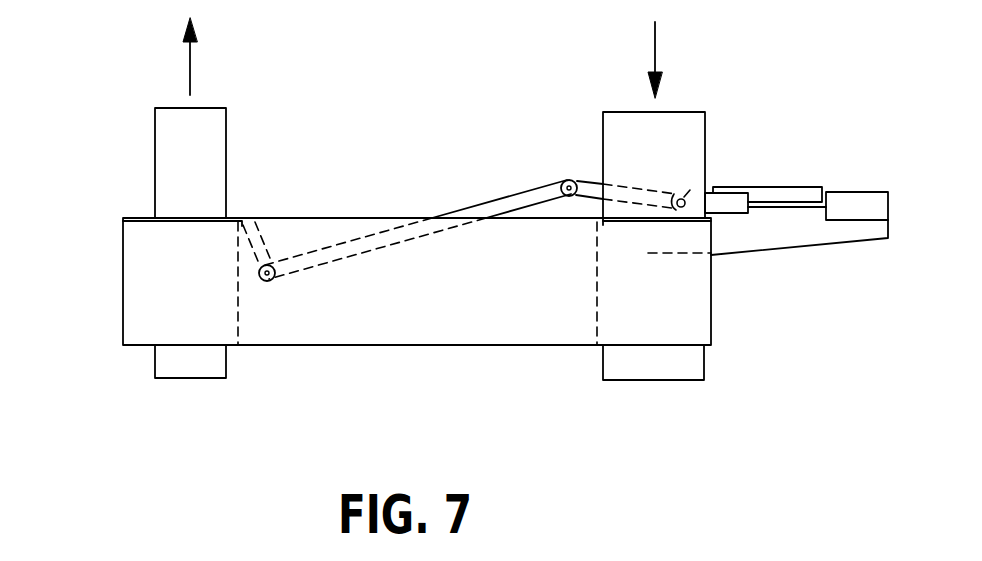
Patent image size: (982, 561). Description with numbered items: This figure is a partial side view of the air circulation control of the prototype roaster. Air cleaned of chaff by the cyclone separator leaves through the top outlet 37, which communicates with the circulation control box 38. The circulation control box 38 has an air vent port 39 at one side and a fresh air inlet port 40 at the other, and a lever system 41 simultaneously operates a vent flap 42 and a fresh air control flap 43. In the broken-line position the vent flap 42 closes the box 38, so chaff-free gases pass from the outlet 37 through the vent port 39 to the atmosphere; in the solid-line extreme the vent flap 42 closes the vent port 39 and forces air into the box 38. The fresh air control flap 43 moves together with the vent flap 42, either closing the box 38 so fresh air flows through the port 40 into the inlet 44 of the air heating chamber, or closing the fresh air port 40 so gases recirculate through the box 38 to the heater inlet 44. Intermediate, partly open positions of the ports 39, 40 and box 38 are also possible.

The top outlet 37 is at (191, 366).
The circulation control box 38 is at (441, 318).
The air vent port 39 is at (209, 169).
The fresh air inlet port 40 is at (672, 159).
The lever system 41 is at (523, 190).
The vent flap 42 is at (178, 222).
The fresh air control flap 43 is at (633, 224).
The inlet of air heating chamber 44 is at (660, 368).